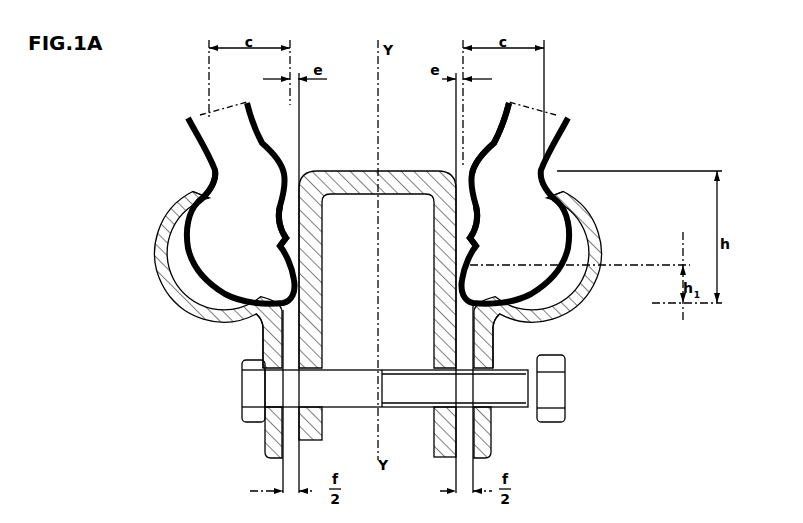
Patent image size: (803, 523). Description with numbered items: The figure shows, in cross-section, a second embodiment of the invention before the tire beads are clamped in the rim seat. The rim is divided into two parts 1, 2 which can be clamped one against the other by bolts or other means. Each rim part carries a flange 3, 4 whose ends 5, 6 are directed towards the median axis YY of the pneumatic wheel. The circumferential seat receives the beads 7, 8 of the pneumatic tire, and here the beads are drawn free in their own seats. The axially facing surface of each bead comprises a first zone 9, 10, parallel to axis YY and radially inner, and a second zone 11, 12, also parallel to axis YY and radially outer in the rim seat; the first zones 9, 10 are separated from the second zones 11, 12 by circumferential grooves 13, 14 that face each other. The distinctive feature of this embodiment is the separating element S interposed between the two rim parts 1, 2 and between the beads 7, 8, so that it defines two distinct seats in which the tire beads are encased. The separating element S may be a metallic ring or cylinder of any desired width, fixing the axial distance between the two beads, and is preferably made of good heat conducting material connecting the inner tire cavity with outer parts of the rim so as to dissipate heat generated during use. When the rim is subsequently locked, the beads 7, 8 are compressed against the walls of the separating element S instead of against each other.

The rim part 1 is at (272, 338).
The rim part 2 is at (482, 327).
The flange 3 is at (175, 263).
The flange 4 is at (550, 285).
The flange end 5 is at (185, 190).
The flange end 6 is at (558, 187).
The bead 7 is at (230, 222).
The bead 8 is at (560, 206).
The first zone 9 is at (228, 307).
The first zone 10 is at (513, 313).
The second zone 11 is at (192, 153).
The second zone 12 is at (472, 183).
The circumferential groove 13 is at (283, 238).
The circumferential groove 14 is at (472, 235).
The separating element S is at (394, 168).